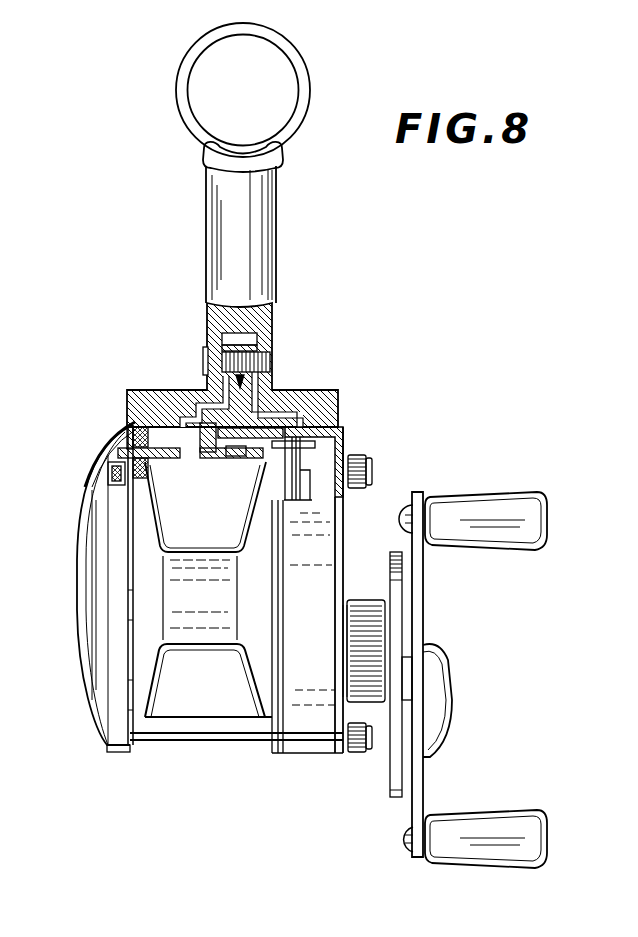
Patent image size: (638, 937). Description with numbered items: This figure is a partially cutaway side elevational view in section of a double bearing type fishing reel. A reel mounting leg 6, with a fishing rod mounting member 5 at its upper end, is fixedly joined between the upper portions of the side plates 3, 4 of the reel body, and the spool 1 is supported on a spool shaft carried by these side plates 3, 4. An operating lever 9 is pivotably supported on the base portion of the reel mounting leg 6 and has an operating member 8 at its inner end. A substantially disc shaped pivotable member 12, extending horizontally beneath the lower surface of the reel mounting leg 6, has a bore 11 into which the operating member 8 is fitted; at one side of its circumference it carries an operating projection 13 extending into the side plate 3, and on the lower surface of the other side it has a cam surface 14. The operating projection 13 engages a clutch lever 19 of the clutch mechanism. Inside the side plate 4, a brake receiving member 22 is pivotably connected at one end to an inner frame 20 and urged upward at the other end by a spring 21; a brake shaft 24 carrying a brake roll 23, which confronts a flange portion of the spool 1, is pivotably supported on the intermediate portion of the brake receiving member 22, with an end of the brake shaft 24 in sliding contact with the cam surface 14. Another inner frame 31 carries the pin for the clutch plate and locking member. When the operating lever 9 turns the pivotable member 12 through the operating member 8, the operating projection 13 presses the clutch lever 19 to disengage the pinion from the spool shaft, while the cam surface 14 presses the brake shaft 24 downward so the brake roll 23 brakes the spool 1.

The spool 1 is at (207, 632).
The side plate 3 is at (328, 526).
The side plate 4 is at (90, 640).
The fishing rod mounting member 5 is at (282, 153).
The reel mounting leg 6 is at (256, 253).
The operating member 8 is at (205, 452).
The operating lever 9 is at (270, 360).
The bore 11 is at (236, 456).
The pivotable member 12 is at (272, 428).
The operating projection 13 is at (340, 470).
The cam surface 14 is at (183, 420).
The clutch lever 19 is at (300, 462).
The inner frame 20 is at (127, 590).
The spring 21 is at (130, 505).
The brake receiving member 22 is at (121, 445).
The brake roll 23 is at (141, 427).
The brake shaft 24 is at (178, 462).
The inner frame 31 is at (305, 566).